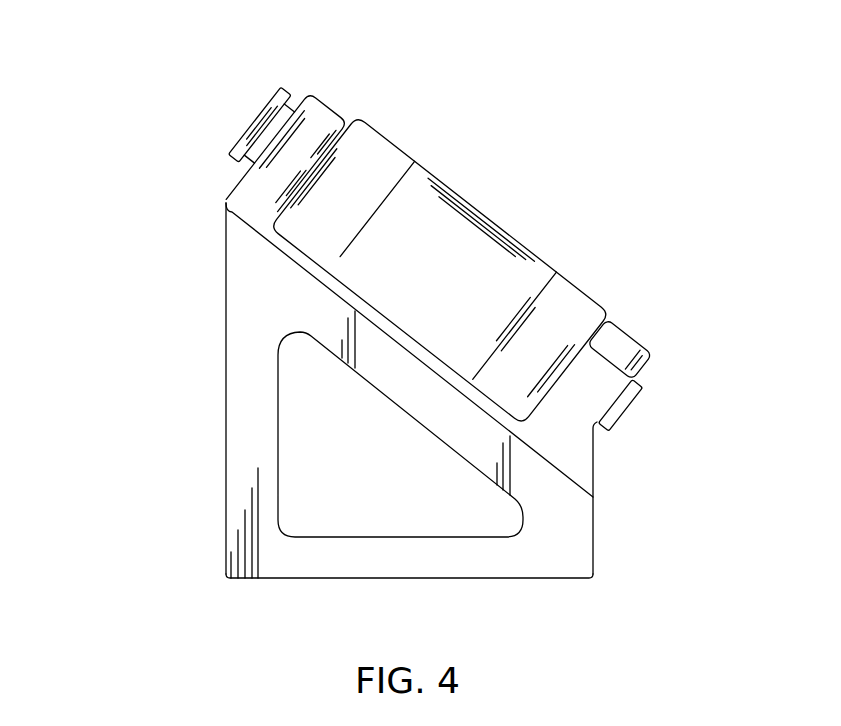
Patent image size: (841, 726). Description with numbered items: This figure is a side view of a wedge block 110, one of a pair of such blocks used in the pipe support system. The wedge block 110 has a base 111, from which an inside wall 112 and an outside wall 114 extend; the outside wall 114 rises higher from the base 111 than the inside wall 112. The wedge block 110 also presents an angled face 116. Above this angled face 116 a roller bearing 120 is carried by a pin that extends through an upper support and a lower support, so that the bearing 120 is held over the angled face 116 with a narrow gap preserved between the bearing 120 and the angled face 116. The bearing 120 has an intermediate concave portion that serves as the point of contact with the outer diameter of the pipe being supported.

The wedge block 110 is at (364, 398).
The base 111 is at (438, 563).
The inside wall 112 is at (578, 537).
The outside wall 114 is at (244, 408).
The angled face 116 is at (378, 313).
The bearing 120 is at (445, 259).